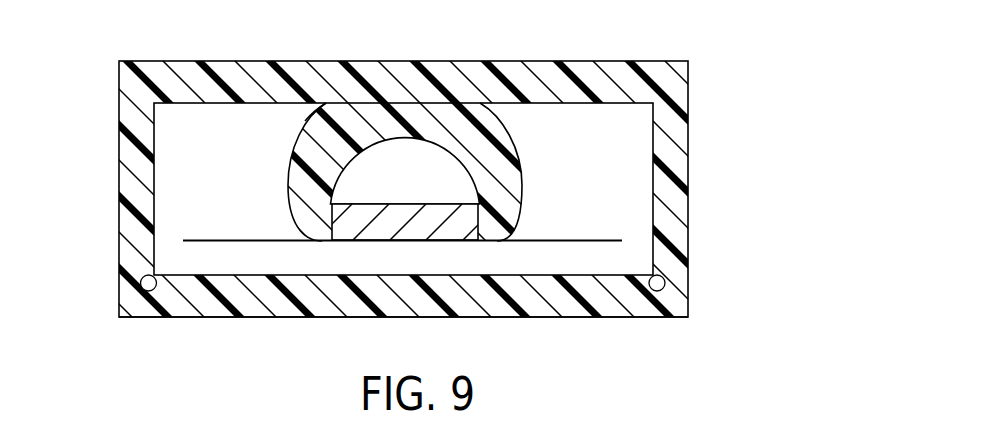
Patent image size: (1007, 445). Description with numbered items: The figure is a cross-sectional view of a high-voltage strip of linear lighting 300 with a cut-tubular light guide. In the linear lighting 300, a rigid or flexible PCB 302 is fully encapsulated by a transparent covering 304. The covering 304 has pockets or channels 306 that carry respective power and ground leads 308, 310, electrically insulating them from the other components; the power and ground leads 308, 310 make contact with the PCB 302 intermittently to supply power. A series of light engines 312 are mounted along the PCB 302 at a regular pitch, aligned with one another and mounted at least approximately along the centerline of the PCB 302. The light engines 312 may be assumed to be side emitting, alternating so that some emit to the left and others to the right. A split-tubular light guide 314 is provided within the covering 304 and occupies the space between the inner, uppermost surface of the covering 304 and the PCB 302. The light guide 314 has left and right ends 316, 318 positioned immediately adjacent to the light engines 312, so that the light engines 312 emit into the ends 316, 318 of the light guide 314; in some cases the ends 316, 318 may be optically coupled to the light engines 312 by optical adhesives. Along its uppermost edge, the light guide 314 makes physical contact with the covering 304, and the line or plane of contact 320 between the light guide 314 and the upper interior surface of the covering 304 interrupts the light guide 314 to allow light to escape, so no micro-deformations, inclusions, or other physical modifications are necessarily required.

The linear lighting 300 is at (536, 58).
The PCB 302 is at (592, 239).
The transparent covering 304 is at (685, 143).
The pockets or channels 306 is at (155, 292).
The power lead 308 is at (146, 281).
The ground lead 310 is at (660, 281).
The light engines 312 is at (400, 205).
The split-tubular light guide 314 is at (500, 132).
The left end 316 is at (333, 220).
The right end 318 is at (477, 224).
The line or plane of contact 320 is at (328, 104).